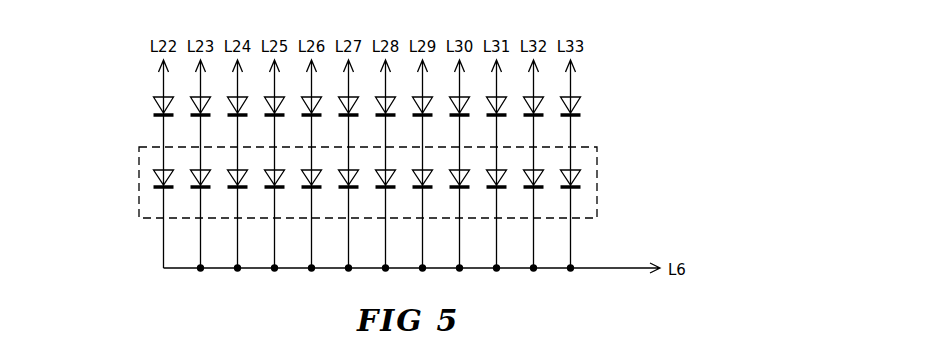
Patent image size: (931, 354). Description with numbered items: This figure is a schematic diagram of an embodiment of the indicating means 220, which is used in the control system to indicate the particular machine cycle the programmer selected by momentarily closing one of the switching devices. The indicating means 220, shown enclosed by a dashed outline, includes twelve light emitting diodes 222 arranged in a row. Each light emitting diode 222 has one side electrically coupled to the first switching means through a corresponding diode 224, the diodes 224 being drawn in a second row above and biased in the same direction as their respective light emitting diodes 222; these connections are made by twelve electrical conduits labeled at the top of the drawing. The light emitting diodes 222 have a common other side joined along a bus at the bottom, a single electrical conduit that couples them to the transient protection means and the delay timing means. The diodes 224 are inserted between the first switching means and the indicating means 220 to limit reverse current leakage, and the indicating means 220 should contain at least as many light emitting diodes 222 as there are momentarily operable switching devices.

The indicating means 220 is at (597, 183).
The light emitting diodes 222 is at (131, 178).
The diodes 224 is at (587, 83).